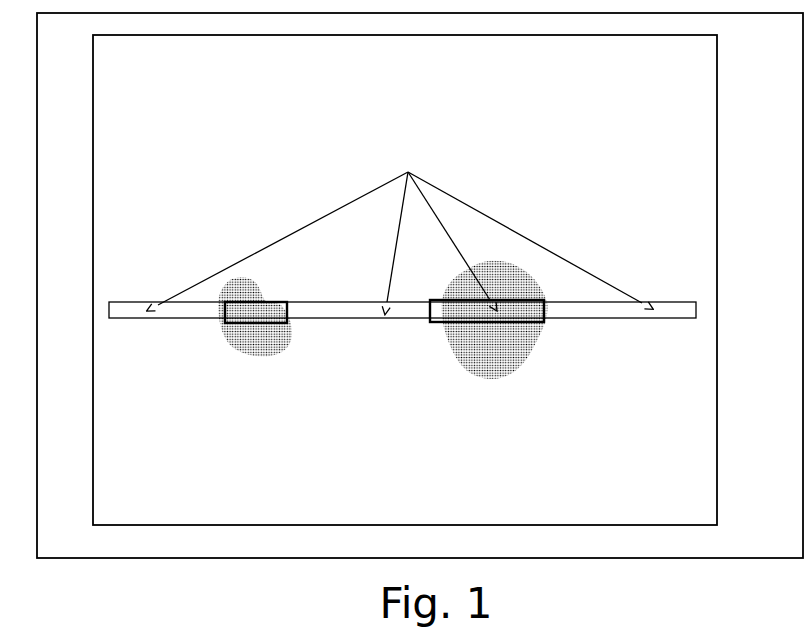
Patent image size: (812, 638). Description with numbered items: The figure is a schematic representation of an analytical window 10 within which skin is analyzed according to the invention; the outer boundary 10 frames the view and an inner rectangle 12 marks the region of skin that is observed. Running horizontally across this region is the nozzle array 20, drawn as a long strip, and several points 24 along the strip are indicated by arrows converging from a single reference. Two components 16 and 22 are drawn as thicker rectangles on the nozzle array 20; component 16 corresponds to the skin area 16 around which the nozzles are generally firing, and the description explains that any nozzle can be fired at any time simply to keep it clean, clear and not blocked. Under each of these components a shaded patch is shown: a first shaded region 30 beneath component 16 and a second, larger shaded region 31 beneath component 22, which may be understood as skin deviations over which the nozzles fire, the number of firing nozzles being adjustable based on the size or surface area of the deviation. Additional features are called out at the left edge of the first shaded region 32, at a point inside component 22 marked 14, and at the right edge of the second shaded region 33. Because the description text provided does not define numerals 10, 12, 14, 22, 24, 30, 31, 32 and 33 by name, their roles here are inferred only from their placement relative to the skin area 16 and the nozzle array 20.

The substrate / outer frame 10 is at (420, 285).
The inner region / display area 12 is at (405, 280).
The contact region 14 is at (532, 320).
The skin area 16 is at (285, 325).
The nozzle array 20 is at (702, 310).
The second electronic component 22 is at (453, 312).
The solder / bonding points 24 is at (400, 225).
The first flux residue area 30 is at (263, 357).
The second flux residue area 31 is at (498, 385).
The edge of first residue area 32 is at (225, 324).
The edge of second residue area 33 is at (528, 326).